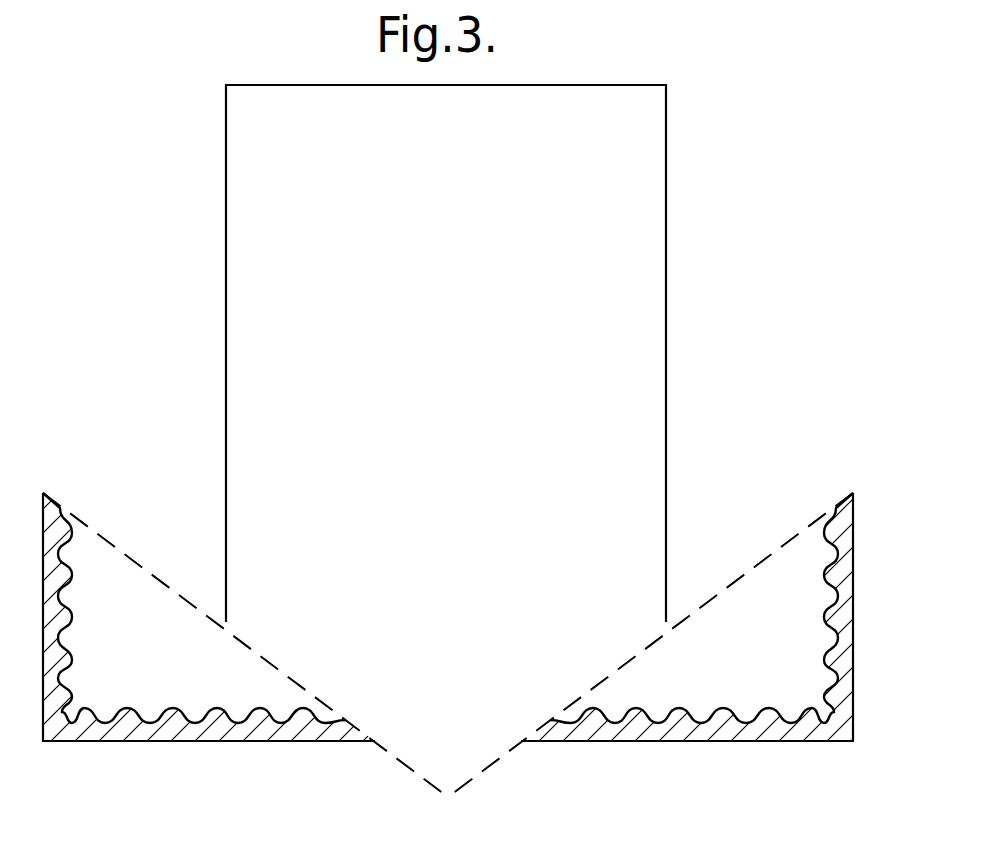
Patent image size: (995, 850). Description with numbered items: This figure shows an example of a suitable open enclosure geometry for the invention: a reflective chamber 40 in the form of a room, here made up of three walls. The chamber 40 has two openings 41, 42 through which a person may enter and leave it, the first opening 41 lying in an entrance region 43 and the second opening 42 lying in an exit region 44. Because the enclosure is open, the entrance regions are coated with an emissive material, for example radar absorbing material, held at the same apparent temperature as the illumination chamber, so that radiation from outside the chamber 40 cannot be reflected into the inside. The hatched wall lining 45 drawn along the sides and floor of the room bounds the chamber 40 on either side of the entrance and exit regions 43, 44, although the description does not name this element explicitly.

The reflective chamber 40 is at (226, 133).
The opening 41 is at (230, 660).
The opening 42 is at (660, 653).
The entrance region 43 is at (140, 578).
The exit region 44 is at (740, 587).
The hatched wall / lining 45 is at (58, 742).